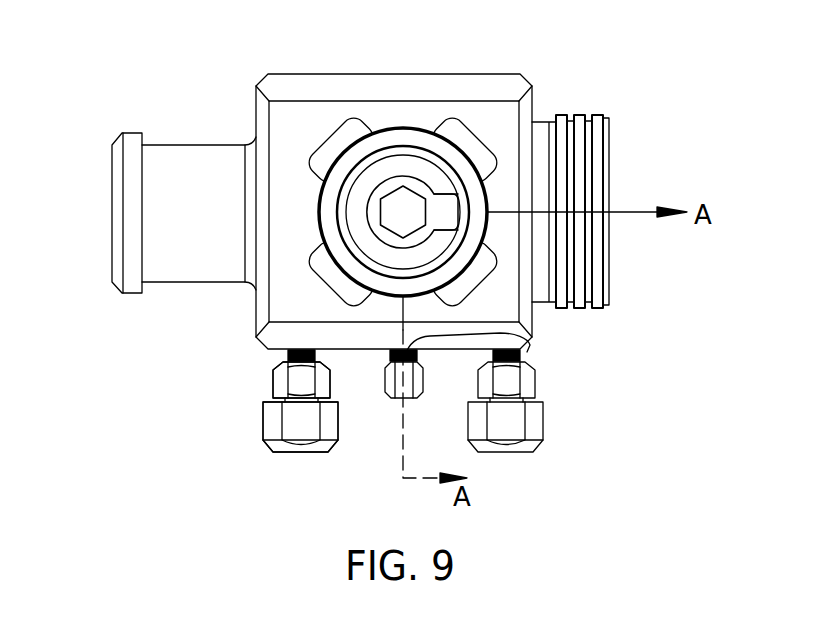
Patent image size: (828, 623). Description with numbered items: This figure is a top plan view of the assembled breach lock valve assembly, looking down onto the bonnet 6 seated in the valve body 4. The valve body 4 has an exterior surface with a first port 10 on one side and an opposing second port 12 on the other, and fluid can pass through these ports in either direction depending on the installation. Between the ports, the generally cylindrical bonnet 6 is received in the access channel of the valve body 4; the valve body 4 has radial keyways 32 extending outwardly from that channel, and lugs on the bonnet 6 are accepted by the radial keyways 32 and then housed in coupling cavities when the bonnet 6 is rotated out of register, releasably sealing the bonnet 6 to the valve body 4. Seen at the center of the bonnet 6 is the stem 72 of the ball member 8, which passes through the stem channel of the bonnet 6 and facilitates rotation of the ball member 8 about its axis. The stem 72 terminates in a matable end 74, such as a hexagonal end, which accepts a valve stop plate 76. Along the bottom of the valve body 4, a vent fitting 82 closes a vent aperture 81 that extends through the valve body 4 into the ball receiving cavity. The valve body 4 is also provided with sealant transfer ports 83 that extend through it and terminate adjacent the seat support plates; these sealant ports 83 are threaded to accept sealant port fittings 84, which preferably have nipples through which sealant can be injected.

The valve body 4 is at (523, 73).
The bonnet 6 is at (483, 152).
The ball member 8 is at (357, 122).
The first port 10 is at (108, 263).
The second port 12 is at (611, 280).
The radial keyways 32 is at (437, 123).
The stem 72 is at (393, 192).
The matable end 74 is at (376, 200).
The valve stop plate 76 is at (437, 229).
The vent aperture 81 is at (460, 248).
The vent fitting 82 is at (415, 380).
The sealant transfer ports 83 is at (288, 352).
The sealant port fittings 84 is at (264, 424).